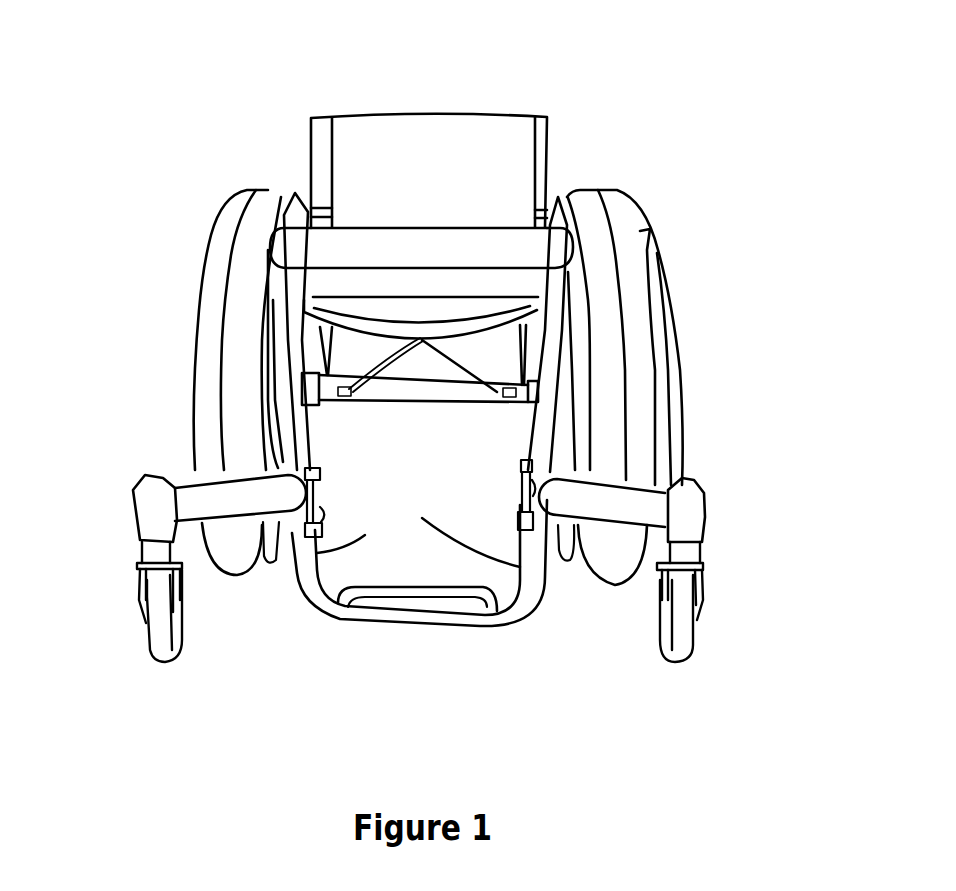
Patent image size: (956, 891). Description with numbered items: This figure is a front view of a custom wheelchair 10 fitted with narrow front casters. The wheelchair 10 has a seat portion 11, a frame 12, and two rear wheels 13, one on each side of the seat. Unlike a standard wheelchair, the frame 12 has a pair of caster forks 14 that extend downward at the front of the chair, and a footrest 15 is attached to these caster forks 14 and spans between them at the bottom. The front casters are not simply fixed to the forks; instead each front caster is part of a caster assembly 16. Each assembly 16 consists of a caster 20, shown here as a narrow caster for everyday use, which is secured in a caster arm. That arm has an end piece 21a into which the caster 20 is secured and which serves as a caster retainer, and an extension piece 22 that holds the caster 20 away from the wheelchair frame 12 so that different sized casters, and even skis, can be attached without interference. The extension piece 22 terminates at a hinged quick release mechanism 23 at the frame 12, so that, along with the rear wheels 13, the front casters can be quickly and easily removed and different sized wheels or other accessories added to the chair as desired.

The wheelchair 10 is at (194, 123).
The seat portion 11 is at (392, 127).
The frame 12 is at (560, 292).
The rear wheels 13 is at (213, 282).
The caster forks 14 is at (365, 535).
The footrest 15 is at (445, 624).
The front caster assembly 16 is at (155, 445).
The caster 20 is at (143, 630).
The end piece 21a is at (808, 476).
The extension piece 22 is at (292, 546).
The hinged quick release mechanism 23 is at (515, 514).